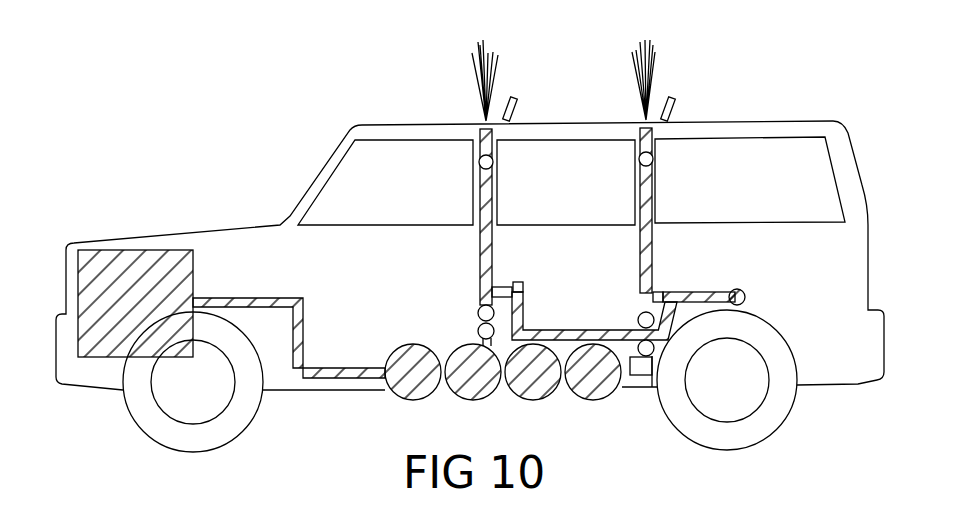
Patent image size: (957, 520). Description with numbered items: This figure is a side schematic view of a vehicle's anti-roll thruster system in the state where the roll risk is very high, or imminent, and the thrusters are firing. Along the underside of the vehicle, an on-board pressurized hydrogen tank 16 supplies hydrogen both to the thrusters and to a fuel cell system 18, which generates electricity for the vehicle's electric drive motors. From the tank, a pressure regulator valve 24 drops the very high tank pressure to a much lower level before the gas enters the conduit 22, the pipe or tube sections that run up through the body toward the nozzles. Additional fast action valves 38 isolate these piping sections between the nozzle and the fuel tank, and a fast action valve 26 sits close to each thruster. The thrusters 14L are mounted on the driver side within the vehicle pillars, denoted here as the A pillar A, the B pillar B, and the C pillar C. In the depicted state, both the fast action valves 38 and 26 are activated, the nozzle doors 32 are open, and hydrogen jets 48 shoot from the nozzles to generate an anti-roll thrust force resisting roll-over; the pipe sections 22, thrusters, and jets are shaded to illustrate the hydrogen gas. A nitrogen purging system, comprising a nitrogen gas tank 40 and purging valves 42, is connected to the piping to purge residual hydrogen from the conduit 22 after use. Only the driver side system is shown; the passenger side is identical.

The fuel cell system 18 is at (127, 250).
The A pillar A is at (323, 175).
The conduit 22 is at (482, 197).
The fast action valve 26 is at (479, 162).
The hydrogen jets 48 is at (493, 70).
The nozzle doors 32 is at (515, 100).
The thrusters 14L is at (482, 150).
The B pillar B is at (493, 150).
The C pillar C is at (673, 221).
The purging valves 42 is at (520, 282).
The nitrogen gas tank 40 is at (747, 293).
The fast action valves 38 is at (479, 313).
The pressure regulator valve 24 is at (478, 330).
The pressurized hydrogen tank 16 is at (627, 405).